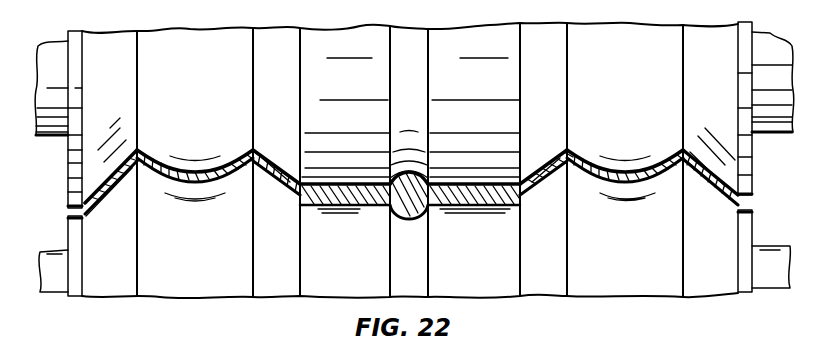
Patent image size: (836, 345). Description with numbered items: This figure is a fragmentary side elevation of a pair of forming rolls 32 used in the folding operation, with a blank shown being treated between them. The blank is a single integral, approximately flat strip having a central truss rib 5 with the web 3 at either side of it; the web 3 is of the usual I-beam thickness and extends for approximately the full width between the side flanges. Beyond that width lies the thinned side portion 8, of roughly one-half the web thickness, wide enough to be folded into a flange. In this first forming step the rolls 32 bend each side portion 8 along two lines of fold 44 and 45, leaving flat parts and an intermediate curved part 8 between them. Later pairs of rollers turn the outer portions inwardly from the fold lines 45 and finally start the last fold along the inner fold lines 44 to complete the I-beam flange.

The rolls 32 is at (414, 160).
The web 3 is at (500, 206).
The truss rib 5 is at (409, 222).
The side portion 8 is at (625, 185).
The line of fold 44 is at (254, 153).
The line of fold 45 is at (138, 152).